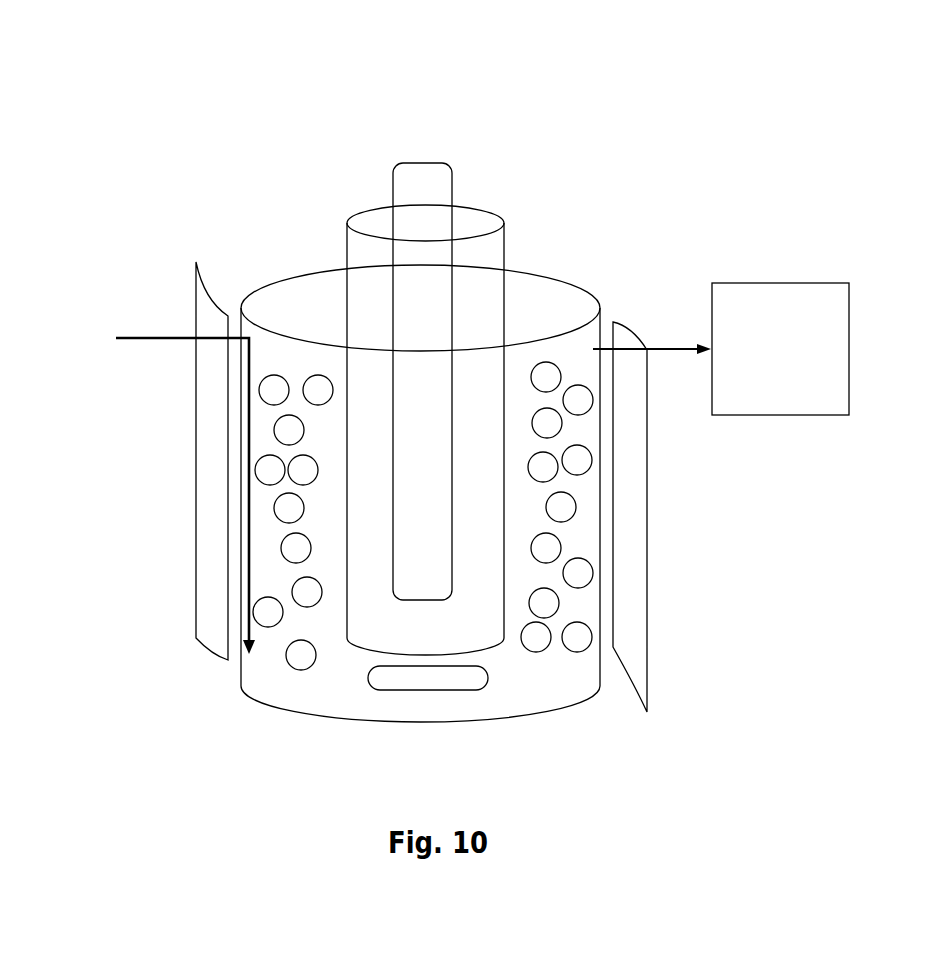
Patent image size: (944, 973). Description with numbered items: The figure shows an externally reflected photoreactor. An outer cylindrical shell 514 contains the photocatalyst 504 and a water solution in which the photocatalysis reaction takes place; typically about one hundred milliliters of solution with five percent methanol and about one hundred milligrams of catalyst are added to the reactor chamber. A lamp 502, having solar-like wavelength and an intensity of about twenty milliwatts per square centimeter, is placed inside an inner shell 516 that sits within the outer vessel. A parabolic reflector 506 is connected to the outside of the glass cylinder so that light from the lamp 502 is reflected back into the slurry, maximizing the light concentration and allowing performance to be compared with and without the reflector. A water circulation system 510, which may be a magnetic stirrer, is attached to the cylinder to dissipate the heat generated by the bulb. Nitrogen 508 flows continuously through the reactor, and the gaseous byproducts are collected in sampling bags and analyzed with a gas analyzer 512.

The lamp 502 is at (412, 183).
The photocatalyst 504 is at (297, 663).
The parabolic reflector 506 is at (635, 553).
The nitrogen 508 is at (130, 338).
The water circulation system 510 is at (470, 678).
The gas analyzer 512 is at (721, 349).
The cylindrical shell 514 is at (547, 276).
The inner shell 516 is at (500, 217).